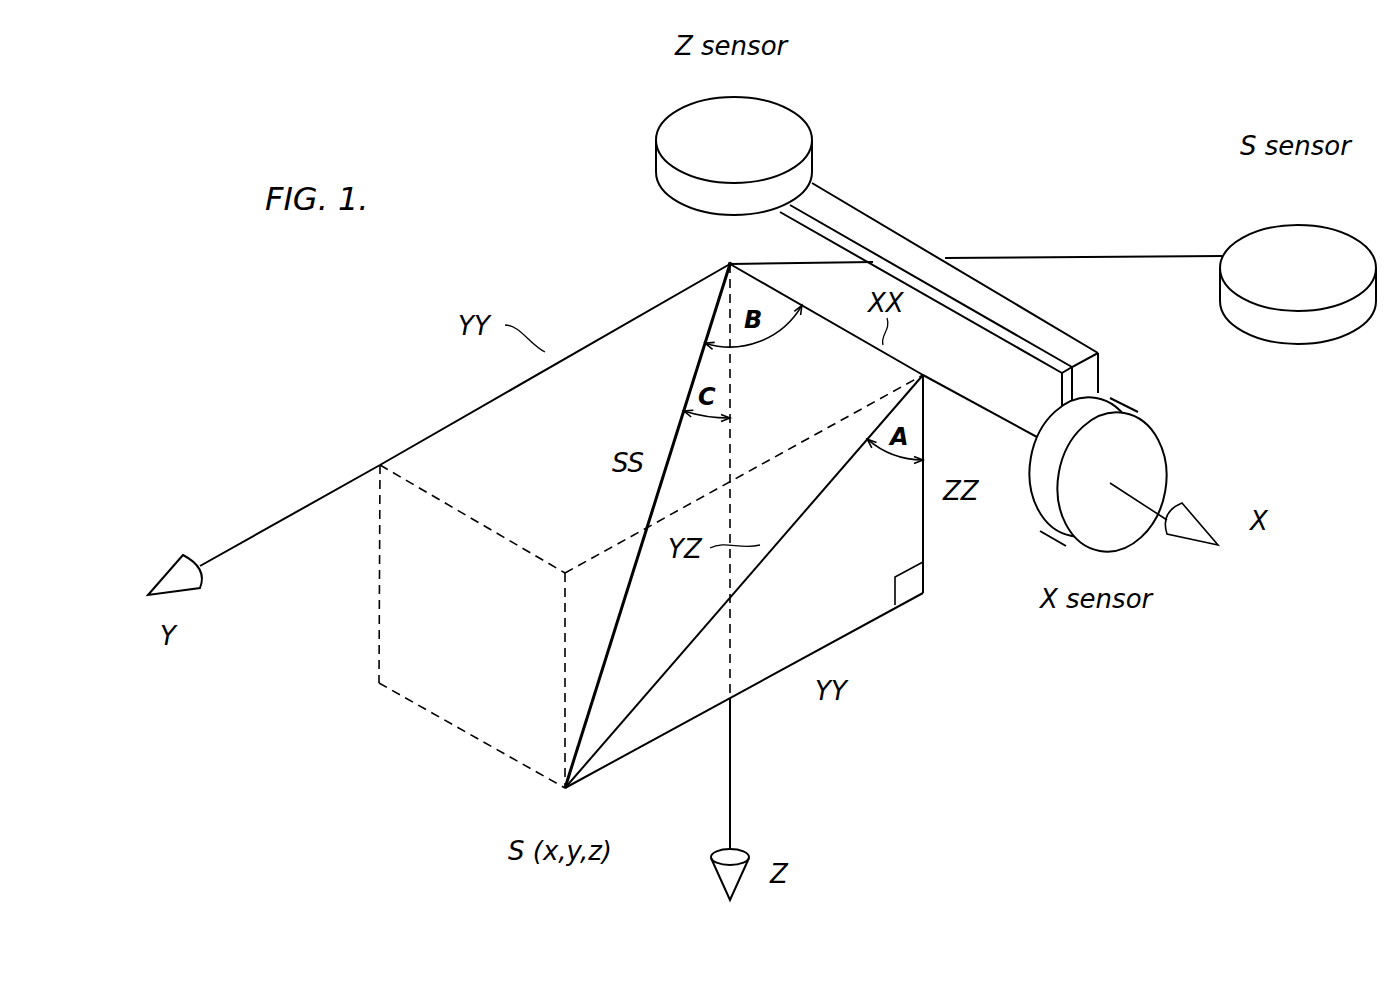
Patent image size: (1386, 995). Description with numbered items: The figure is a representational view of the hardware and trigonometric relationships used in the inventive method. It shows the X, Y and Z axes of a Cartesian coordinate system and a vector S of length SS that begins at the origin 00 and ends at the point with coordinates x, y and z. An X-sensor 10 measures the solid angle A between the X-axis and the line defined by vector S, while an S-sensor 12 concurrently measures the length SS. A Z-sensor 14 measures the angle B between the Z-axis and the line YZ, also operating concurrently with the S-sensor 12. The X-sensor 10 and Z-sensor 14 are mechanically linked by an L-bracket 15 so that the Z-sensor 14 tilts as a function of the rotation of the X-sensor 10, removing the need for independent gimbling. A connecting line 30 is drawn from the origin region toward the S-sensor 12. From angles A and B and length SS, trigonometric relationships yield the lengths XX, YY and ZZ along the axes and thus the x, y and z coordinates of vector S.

The X-sensor 10 is at (1180, 445).
The S-sensor 12 is at (1240, 225).
The Z-sensor 14 is at (655, 123).
The L-bracket 15 is at (918, 257).
The connecting line to S sensor 30 is at (1088, 240).
The origin 00 is at (720, 259).